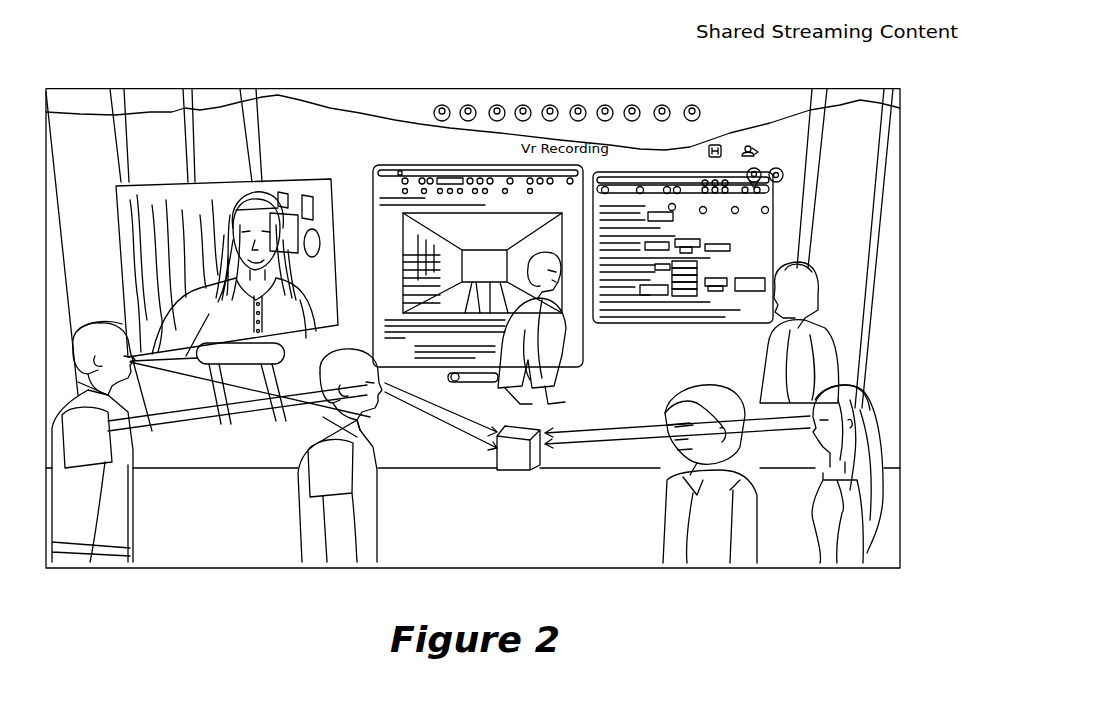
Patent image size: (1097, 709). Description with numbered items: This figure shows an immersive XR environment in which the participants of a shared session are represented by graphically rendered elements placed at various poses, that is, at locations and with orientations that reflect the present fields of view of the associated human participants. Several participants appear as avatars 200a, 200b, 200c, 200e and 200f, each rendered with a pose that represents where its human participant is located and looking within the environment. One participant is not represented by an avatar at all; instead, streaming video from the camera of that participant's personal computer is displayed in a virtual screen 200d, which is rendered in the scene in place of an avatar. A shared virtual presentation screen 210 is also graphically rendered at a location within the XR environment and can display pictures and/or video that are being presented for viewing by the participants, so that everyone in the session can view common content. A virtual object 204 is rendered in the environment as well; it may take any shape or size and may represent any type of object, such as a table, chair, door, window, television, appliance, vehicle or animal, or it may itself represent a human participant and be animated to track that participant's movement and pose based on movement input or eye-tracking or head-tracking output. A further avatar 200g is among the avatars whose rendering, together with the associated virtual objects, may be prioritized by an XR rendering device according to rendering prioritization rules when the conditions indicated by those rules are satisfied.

The avatar 200a is at (105, 378).
The avatar 200b is at (357, 455).
The avatar 200c is at (848, 412).
The virtual screen 200d is at (273, 187).
The avatar 200e is at (690, 503).
The avatar 200f is at (822, 315).
The avatar 200g is at (540, 305).
The virtual object 204 is at (525, 463).
The shared virtual presentation screen 210 is at (611, 166).